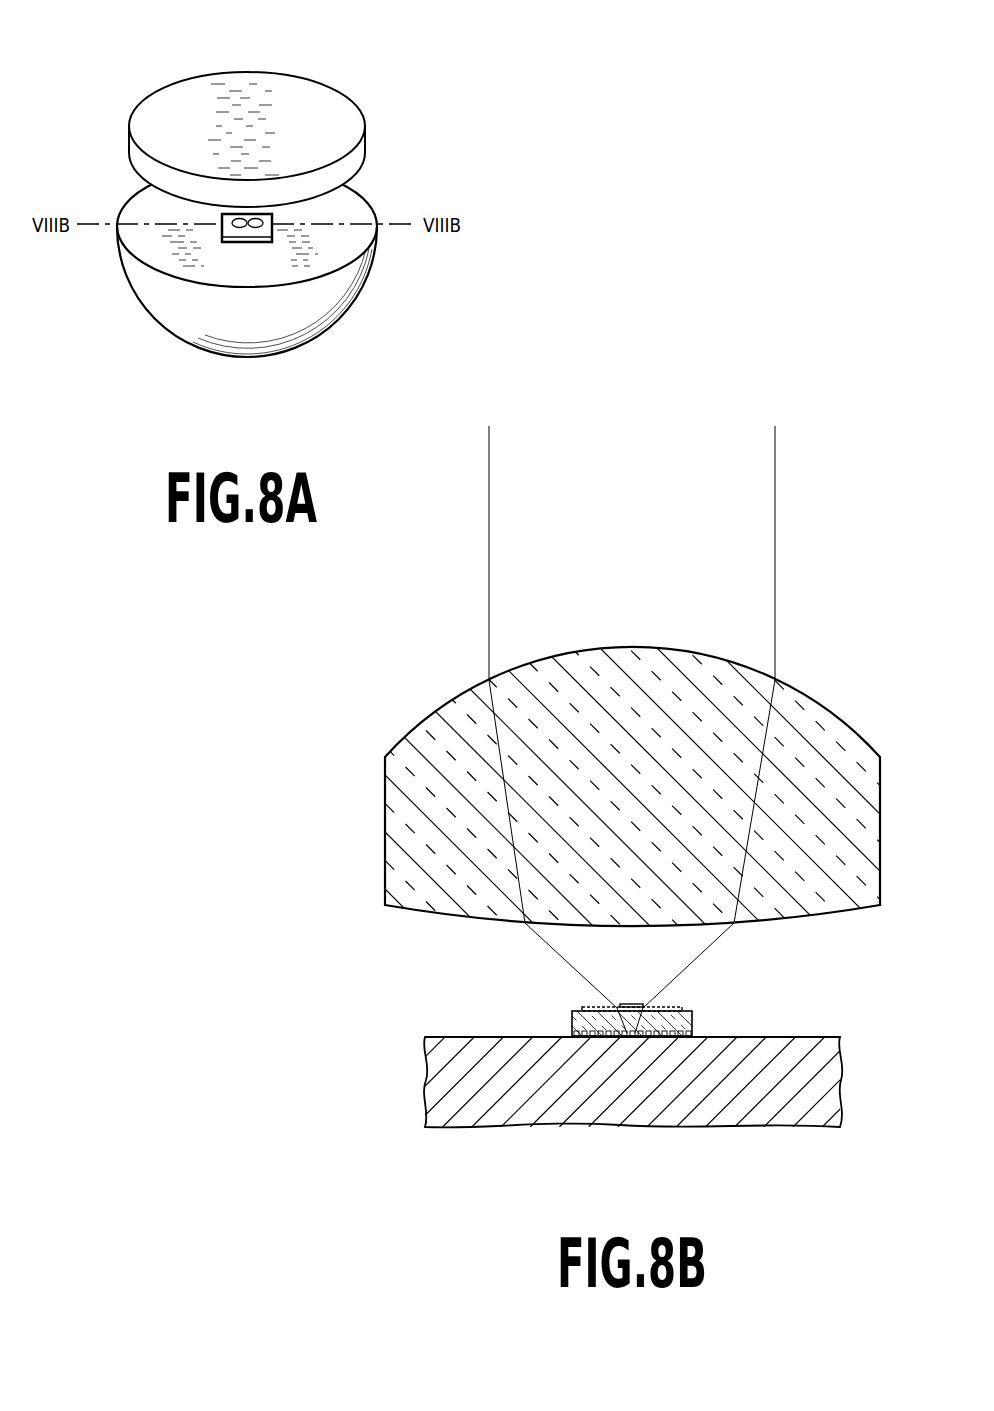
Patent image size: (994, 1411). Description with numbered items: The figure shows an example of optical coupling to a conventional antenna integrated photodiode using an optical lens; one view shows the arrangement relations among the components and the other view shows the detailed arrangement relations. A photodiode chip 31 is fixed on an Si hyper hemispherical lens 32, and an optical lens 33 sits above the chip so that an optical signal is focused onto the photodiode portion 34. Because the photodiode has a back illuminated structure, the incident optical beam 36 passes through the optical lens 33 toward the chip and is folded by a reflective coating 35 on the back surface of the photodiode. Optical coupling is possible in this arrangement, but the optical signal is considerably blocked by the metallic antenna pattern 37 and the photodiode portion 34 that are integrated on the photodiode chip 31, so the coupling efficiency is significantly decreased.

In FIG. 8A, the photodiode chip 31 is at (265, 228).
In FIG. 8B, the photodiode chip 31 is at (643, 1006).
In FIG. 8A, the Si hyper hemispherical lens 32 is at (315, 335).
In FIG. 8B, the Si hyper hemispherical lens 32 is at (528, 1115).
In FIG. 8A, the optical lens 33 is at (238, 80).
In FIG. 8B, the optical lens 33 is at (430, 713).
In FIG. 8B, the photodiode portion 34 is at (628, 1004).
In FIG. 8B, the reflective coating 35 is at (692, 1025).
In FIG. 8B, the incident optical beam 36 is at (707, 572).
In FIG. 8B, the metallic antenna pattern 37 is at (587, 1005).